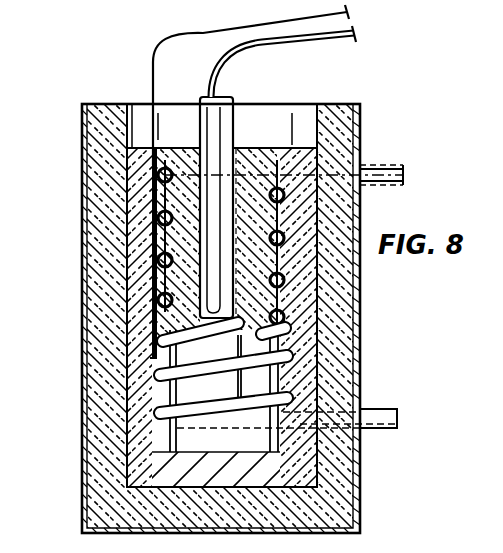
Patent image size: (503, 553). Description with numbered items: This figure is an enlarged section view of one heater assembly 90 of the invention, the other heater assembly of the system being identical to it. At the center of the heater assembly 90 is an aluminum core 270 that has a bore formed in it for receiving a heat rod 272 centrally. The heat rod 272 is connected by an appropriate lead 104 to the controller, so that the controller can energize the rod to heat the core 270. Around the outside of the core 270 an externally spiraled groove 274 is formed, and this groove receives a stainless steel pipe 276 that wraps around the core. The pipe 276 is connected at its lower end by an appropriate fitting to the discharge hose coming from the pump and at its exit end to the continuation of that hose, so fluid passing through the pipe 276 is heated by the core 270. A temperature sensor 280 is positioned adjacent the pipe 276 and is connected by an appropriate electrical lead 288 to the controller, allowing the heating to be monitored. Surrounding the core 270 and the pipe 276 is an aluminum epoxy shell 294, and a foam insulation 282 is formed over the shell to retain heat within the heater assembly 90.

The heater assembly 90 is at (78, 304).
The lead 104 is at (305, 46).
The aluminum core 270 is at (288, 438).
The heat rod 272 is at (236, 116).
The externally spiraled groove 274 is at (300, 340).
The stainless steel pipe 276 is at (162, 413).
The temperature sensor 280 is at (152, 190).
The foam insulation 282 is at (344, 368).
The electrical lead 288 is at (265, 20).
The aluminum epoxy shell 294 is at (297, 463).